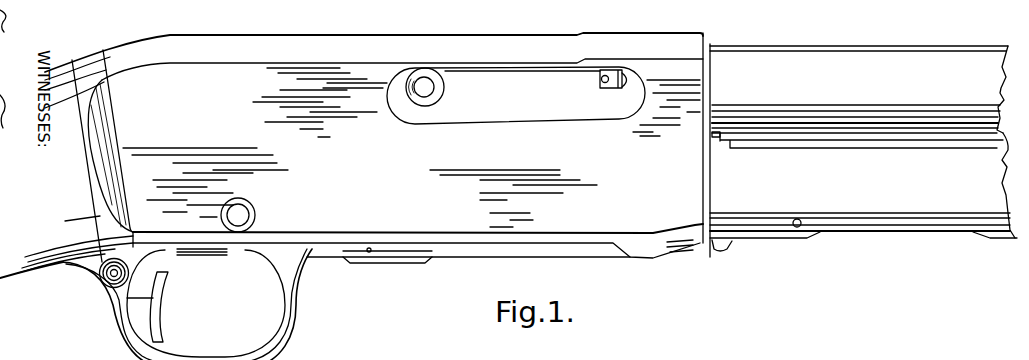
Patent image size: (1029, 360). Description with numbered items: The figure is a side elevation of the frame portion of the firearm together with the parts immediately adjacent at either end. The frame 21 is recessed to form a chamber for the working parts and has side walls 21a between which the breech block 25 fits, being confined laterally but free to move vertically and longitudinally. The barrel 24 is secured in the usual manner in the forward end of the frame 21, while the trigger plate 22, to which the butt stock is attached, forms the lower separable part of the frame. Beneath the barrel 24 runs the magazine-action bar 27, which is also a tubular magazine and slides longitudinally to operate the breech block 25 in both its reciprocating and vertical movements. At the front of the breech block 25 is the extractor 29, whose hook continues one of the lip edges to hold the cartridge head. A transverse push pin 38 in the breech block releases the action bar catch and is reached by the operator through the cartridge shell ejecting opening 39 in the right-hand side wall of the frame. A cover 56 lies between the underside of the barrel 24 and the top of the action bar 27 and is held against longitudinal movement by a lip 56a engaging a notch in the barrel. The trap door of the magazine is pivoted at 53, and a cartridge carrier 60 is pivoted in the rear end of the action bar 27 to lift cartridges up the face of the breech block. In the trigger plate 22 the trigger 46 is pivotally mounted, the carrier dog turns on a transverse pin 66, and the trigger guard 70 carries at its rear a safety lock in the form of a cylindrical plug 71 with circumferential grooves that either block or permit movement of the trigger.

The frame 21 is at (355, 155).
The side walls of the frame 21a is at (212, 42).
The trigger plate 22 is at (454, 250).
The barrel 24 is at (859, 89).
The breech block 25 is at (522, 87).
The magazine-action bar 27 is at (863, 207).
The extractor 29 is at (634, 80).
The push pin 38 is at (424, 84).
The cartridge shell ejecting opening 39 is at (506, 125).
The trigger 46 is at (207, 257).
The trap door pivot 53 is at (800, 219).
The cover 56 is at (972, 141).
The lip 56a is at (717, 141).
The cartridge carrier 60 is at (730, 243).
The transverse pin 66 is at (368, 253).
The trigger guard 70 is at (284, 310).
The cylindrical plug 71 is at (104, 283).